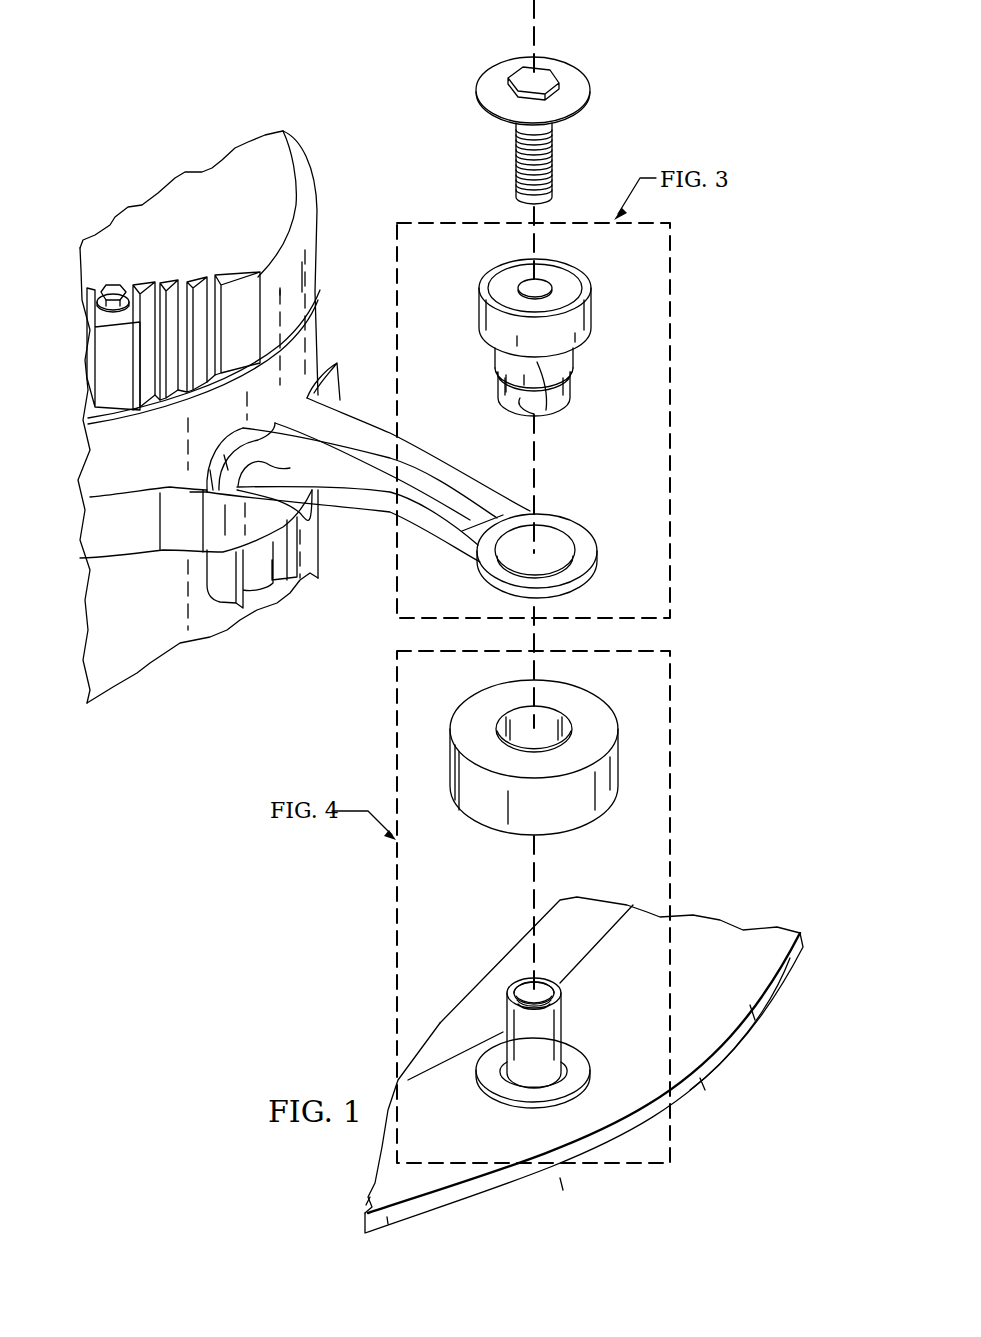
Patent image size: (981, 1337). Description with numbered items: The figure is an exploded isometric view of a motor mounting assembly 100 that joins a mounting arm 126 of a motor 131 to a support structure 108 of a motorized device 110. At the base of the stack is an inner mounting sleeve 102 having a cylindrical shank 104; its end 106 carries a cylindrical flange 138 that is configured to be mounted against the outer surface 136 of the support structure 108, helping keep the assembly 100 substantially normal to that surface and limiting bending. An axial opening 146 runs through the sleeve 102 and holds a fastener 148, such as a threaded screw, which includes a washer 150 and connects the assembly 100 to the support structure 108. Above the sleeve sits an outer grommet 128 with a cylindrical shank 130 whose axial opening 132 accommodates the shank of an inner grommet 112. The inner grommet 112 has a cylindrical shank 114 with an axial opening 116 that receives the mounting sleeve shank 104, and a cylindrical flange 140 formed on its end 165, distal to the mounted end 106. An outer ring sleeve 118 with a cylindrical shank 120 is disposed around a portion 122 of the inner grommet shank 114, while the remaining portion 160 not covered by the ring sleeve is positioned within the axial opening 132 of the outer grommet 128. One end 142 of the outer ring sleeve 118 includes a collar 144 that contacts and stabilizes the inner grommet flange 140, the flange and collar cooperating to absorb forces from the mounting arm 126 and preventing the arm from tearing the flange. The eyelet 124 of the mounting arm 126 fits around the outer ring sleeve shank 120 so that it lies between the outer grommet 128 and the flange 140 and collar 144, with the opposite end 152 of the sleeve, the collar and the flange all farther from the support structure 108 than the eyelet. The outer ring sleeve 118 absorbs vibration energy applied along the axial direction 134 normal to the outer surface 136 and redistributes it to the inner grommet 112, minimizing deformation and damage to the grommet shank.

The motor mounting assembly 100 is at (642, 96).
The inner mounting sleeve 102 is at (552, 1029).
The cylindrical shank 104 is at (569, 1032).
The end 106 is at (512, 1080).
The support structure 108 is at (748, 975).
The motorized device 110 is at (705, 1077).
The inner grommet 112 is at (534, 351).
The cylindrical shank 114 is at (517, 407).
The axial opening 116 is at (527, 283).
The outer ring sleeve 118 is at (580, 372).
The cylindrical shank 120 is at (499, 366).
The portion 122 is at (460, 342).
The eyelet 124 is at (555, 540).
The mounting arm 126 is at (393, 480).
The outer grommet 128 is at (534, 775).
The cylindrical shank 130 is at (575, 832).
The motor 131 is at (233, 231).
The axial opening 132 is at (558, 716).
The direction 134 is at (538, 25).
The outer surface 136 is at (375, 1195).
The cylindrical flange 138 is at (591, 1069).
The cylindrical flange 140 is at (480, 301).
The end 142 is at (574, 350).
The collar 144 is at (494, 350).
The axial opening 146 is at (543, 980).
The fastener 148 is at (497, 130).
The washer 150 is at (481, 96).
The opposite end 152 is at (516, 980).
The remaining portion 160 is at (460, 376).
The end 165 is at (540, 362).